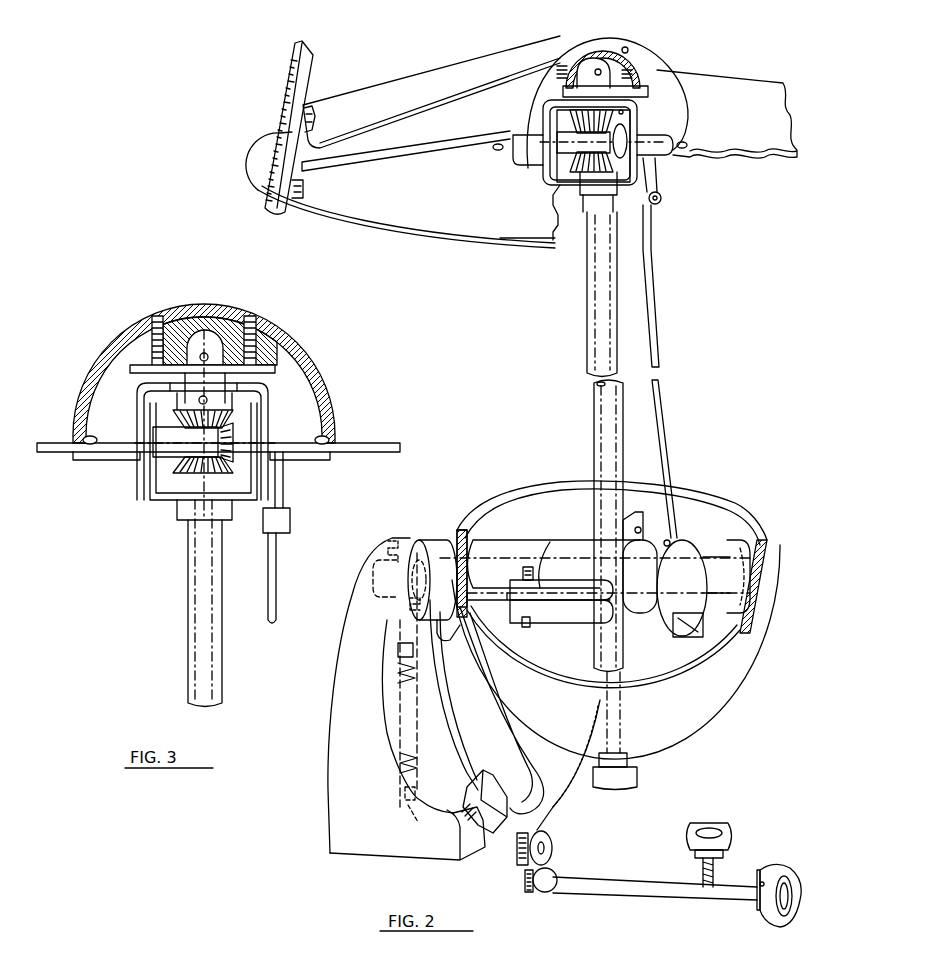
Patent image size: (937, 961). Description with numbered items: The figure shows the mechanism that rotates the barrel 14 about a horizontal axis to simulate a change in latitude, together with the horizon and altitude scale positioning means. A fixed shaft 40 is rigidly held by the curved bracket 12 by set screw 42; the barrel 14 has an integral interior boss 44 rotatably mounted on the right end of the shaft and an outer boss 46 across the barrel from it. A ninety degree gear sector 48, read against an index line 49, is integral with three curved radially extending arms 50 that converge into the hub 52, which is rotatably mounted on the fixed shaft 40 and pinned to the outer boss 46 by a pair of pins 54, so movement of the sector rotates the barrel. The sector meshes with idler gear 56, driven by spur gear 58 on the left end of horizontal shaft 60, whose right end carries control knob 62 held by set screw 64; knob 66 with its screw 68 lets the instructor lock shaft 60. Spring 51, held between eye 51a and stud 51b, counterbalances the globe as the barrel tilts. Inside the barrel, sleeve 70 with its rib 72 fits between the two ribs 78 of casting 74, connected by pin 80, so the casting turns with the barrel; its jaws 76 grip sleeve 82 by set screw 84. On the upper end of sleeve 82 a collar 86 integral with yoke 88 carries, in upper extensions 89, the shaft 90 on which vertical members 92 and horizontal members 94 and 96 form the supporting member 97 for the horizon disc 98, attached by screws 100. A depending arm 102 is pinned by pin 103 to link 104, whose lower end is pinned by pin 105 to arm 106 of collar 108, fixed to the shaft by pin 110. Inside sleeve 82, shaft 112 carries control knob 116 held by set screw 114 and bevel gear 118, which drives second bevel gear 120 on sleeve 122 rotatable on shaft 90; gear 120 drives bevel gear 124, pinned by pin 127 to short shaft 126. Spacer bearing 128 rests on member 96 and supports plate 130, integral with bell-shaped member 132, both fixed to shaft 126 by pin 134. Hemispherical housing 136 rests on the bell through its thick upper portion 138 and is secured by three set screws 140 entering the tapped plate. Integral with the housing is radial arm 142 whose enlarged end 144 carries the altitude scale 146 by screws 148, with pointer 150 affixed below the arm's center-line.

In FIG. 2, the curved bracket 12 is at (383, 848).
In FIG. 2, the barrel 14 is at (740, 667).
In FIG. 2, the fixed shaft 40 is at (377, 573).
In FIG. 2, the set screw 42 is at (391, 540).
In FIG. 2, the interior boss 44 is at (734, 552).
In FIG. 2, the outer boss 46 is at (447, 578).
In FIG. 2, the gear sector 48 is at (562, 796).
In FIG. 2, the index line 49 is at (497, 813).
In FIG. 2, the curved radially extending arms 50 is at (490, 735).
In FIG. 2, the spring 51 is at (402, 677).
In FIG. 2, the eye 51a is at (414, 820).
In FIG. 2, the stud 51b is at (398, 652).
In FIG. 2, the hub 52 is at (460, 532).
In FIG. 2, the pins 54 is at (425, 540).
In FIG. 2, the idler gear 56 is at (553, 847).
In FIG. 2, the spur gear 58 is at (552, 891).
In FIG. 2, the horizontal shaft 60 is at (598, 883).
In FIG. 2, the control knob 62 is at (787, 870).
In FIG. 2, the set screw 64 is at (761, 881).
In FIG. 2, the knob 66 is at (688, 840).
In FIG. 2, the screw 68 is at (702, 872).
In FIG. 2, the sleeve 70 is at (493, 550).
In FIG. 2, the rib 72 is at (502, 604).
In FIG. 2, the casting 74 is at (568, 550).
In FIG. 2, the jaws 76 is at (639, 512).
In FIG. 2, the ribs 78 is at (572, 602).
In FIG. 2, the pin 80 is at (528, 566).
In FIG. 3, the sleeve 82 is at (214, 549).
In FIG. 2, the sleeve 82 is at (591, 306).
In FIG. 2, the set screw 84 is at (640, 538).
In FIG. 3, the collar 86 is at (186, 528).
In FIG. 2, the collar 86 is at (610, 204).
In FIG. 3, the yoke 88 is at (178, 505).
In FIG. 2, the yoke 88 is at (610, 180).
In FIG. 3, the upper extensions 89 is at (151, 482).
In FIG. 2, the upper extensions 89 is at (647, 182).
In FIG. 3, the shaft 90 is at (170, 447).
In FIG. 2, the shaft 90 is at (573, 153).
In FIG. 3, the vertical members 92 is at (138, 402).
In FIG. 2, the vertical members 92 is at (547, 125).
In FIG. 3, the horizontal members 94 is at (113, 451).
In FIG. 2, the horizontal members 94 is at (523, 152).
In FIG. 3, the horizontal member 96 is at (172, 388).
In FIG. 2, the horizontal member 96 is at (629, 108).
In FIG. 3, the supporting member 97 is at (296, 458).
In FIG. 2, the supporting member 97 is at (517, 131).
In FIG. 3, the horizon disc 98 is at (384, 447).
In FIG. 2, the horizon disc 98 is at (396, 222).
In FIG. 3, the screws 100 is at (82, 440).
In FIG. 2, the screws 100 is at (496, 150).
In FIG. 3, the depending arm 102 is at (284, 480).
In FIG. 2, the depending arm 102 is at (655, 173).
In FIG. 3, the pin 103 is at (288, 534).
In FIG. 2, the pin 103 is at (661, 202).
In FIG. 3, the link 104 is at (270, 600).
In FIG. 2, the link 104 is at (646, 248).
In FIG. 2, the pin 105 is at (678, 641).
In FIG. 2, the arm 106 is at (700, 612).
In FIG. 2, the collar 108 is at (660, 606).
In FIG. 2, the pin 110 is at (658, 552).
In FIG. 3, the shaft 112 is at (203, 606).
In FIG. 2, the shaft 112 is at (596, 267).
In FIG. 2, the set screw 114 is at (627, 760).
In FIG. 2, the control knob 116 is at (637, 780).
In FIG. 3, the bevel gear 118 is at (220, 470).
In FIG. 2, the bevel gear 118 is at (595, 168).
In FIG. 3, the second bevel gear 120 is at (235, 412).
In FIG. 2, the second bevel gear 120 is at (627, 125).
In FIG. 3, the sleeve 122 is at (156, 452).
In FIG. 2, the sleeve 122 is at (570, 125).
In FIG. 3, the bevel gear 124 is at (203, 441).
In FIG. 2, the bevel gear 124 is at (577, 112).
In FIG. 3, the short shaft 126 is at (222, 400).
In FIG. 2, the short shaft 126 is at (633, 80).
In FIG. 3, the pin 127 is at (198, 401).
In FIG. 2, the pin 127 is at (599, 69).
In FIG. 3, the spacer bearing 128 is at (160, 365).
In FIG. 3, the plate 130 is at (270, 367).
In FIG. 2, the plate 130 is at (605, 91).
In FIG. 3, the bell-shaped member 132 is at (204, 333).
In FIG. 2, the bell-shaped member 132 is at (593, 73).
In FIG. 3, the pin 134 is at (205, 354).
In FIG. 3, the hemispherical housing 136 is at (308, 366).
In FIG. 2, the hemispherical housing 136 is at (670, 92).
In FIG. 3, the thick upper portion 138 is at (234, 325).
In FIG. 2, the thick upper portion 138 is at (603, 69).
In FIG. 3, the set screws 140 is at (157, 316).
In FIG. 2, the set screws 140 is at (579, 104).
In FIG. 2, the radially extending arm 142 is at (372, 138).
In FIG. 2, the enlarged end 144 is at (296, 196).
In FIG. 2, the altitude scale 146 is at (290, 80).
In FIG. 2, the screws 148 is at (313, 112).
In FIG. 2, the pointer 150 is at (361, 183).